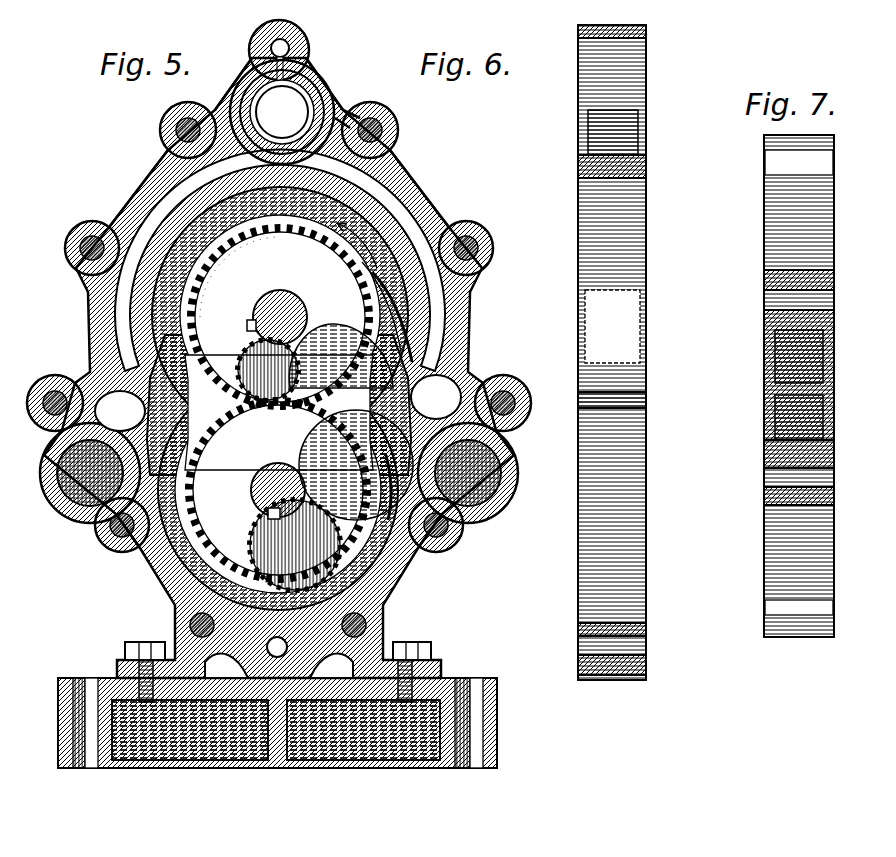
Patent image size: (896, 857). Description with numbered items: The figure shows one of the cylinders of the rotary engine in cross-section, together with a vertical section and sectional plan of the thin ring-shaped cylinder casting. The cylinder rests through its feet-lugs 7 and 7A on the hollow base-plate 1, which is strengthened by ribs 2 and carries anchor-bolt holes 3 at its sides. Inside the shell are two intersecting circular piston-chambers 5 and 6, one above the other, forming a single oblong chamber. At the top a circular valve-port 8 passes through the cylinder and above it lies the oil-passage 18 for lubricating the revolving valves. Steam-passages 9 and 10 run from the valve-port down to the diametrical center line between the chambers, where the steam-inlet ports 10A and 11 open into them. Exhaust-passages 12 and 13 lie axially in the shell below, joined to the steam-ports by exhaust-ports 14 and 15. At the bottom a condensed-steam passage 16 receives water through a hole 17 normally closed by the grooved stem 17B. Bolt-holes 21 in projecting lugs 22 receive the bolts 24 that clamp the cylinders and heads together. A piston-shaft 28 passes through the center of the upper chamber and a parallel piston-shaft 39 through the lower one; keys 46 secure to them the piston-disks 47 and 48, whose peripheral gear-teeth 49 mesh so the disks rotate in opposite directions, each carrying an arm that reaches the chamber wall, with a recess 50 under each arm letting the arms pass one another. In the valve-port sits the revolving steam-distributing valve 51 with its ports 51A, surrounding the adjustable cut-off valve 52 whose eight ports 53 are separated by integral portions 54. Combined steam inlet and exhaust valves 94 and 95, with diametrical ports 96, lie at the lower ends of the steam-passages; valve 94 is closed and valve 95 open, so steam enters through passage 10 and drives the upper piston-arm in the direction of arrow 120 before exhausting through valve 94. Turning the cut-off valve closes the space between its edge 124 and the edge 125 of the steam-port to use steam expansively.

In FIG. 5, the base-plate 1 is at (498, 738).
In FIG. 5, the ribs 2 is at (30, 403).
In FIG. 5, the anchor-bolt holes 3 is at (86, 688).
In FIG. 5, the piston-chamber 5 is at (280, 315).
In FIG. 5, the piston-chamber 6 is at (278, 490).
In FIG. 5, the feet-lug 7 is at (124, 662).
In FIG. 6, the feet-lug 7 is at (575, 133).
In FIG. 5, the feet-lug 7A is at (440, 664).
In FIG. 6, the valve-port 8 is at (648, 103).
In FIG. 7, the valve-port 8 is at (824, 392).
In FIG. 5, the steam-passage 9 is at (100, 325).
In FIG. 7, the steam-passage 9 is at (764, 438).
In FIG. 5, the steam-passage 10 is at (445, 338).
In FIG. 6, the steam-passage 10 is at (580, 145).
In FIG. 7, the steam-passage 10 is at (836, 340).
In FIG. 5, the steam-inlet port 10A is at (279, 404).
In FIG. 5, the steam-inlet port 11 is at (380, 388).
In FIG. 6, the steam-inlet port 11 is at (648, 394).
In FIG. 5, the exhaust-passage 12 is at (48, 473).
In FIG. 5, the exhaust-passage 13 is at (518, 473).
In FIG. 5, the exhaust-port 14 is at (62, 452).
In FIG. 5, the exhaust-port 15 is at (500, 432).
In FIG. 5, the condensed-steam passage 16 is at (290, 636).
In FIG. 6, the condensed-steam passage 16 is at (640, 648).
In FIG. 5, the hole 17 is at (268, 632).
In FIG. 6, the hole 17 is at (640, 620).
In FIG. 5, the stem 17B is at (226, 666).
In FIG. 5, the oil-passage 18 is at (292, 48).
In FIG. 6, the oil-passage 18 is at (650, 53).
In FIG. 5, the bolt-holes 21 is at (165, 133).
In FIG. 7, the bolt-holes 21 is at (838, 300).
In FIG. 5, the lugs 22 is at (162, 114).
In FIG. 5, the bolts 24 is at (185, 118).
In FIG. 5, the piston-shaft 28 is at (288, 298).
In FIG. 5, the piston-shaft 39 is at (253, 490).
In FIG. 5, the keys 46 is at (250, 328).
In FIG. 5, the piston-disk 47 is at (240, 277).
In FIG. 5, the piston-disk 48 is at (334, 465).
In FIG. 5, the gear-teeth 49 is at (310, 237).
In FIG. 5, the recess 50 is at (289, 465).
In FIG. 5, the steam-distributing valve 51 is at (258, 148).
In FIG. 5, the ports 51A is at (330, 96).
In FIG. 5, the cut-off valve 52 is at (282, 112).
In FIG. 5, the ports 53 is at (248, 90).
In FIG. 5, the integral portions 54 is at (312, 70).
In FIG. 5, the combined steam inlet and exhaust valve 94 is at (98, 375).
In FIG. 5, the combined steam inlet and exhaust valve 95 is at (492, 375).
In FIG. 5, the ports 96 is at (278, 403).
In FIG. 5, the arrow 120 is at (357, 245).
In FIG. 5, the edge 124 is at (300, 120).
In FIG. 5, the edge 125 is at (342, 108).